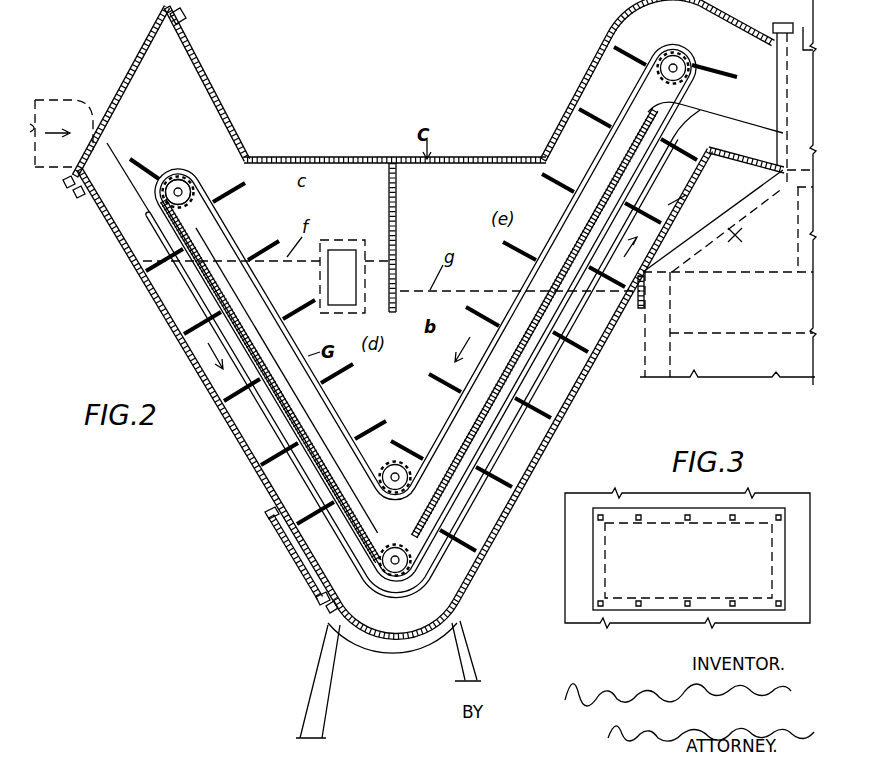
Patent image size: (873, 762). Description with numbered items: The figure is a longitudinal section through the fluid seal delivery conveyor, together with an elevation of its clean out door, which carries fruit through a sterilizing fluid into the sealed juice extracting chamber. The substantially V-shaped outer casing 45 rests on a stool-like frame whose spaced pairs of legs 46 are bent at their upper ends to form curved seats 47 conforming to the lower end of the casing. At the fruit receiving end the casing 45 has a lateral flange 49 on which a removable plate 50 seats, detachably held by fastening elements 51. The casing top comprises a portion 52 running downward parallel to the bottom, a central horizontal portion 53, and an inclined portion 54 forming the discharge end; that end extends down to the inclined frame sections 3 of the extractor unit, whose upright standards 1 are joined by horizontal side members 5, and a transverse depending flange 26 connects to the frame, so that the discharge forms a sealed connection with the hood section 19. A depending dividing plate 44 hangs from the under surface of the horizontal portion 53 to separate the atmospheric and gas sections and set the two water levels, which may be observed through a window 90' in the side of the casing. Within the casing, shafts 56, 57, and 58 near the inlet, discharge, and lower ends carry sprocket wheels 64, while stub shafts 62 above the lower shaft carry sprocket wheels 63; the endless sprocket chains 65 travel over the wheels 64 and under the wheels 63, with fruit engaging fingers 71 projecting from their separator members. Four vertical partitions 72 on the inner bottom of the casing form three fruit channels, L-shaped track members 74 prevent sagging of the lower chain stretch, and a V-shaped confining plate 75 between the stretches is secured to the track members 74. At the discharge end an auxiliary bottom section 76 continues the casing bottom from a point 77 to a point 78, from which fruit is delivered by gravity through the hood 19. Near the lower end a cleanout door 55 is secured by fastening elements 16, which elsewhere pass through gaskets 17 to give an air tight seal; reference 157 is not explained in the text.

In FIG. 2, the upright frame standards 1 is at (660, 355).
In FIG. 2, the upwardly and inwardly extending sections 3 is at (713, 221).
In FIG. 2, the horizontal side members 5 is at (563, 117).
In FIG. 2, the fastening elements 16 is at (330, 603).
In FIG. 3, the fastening elements 16 is at (690, 598).
In FIG. 2, the gaskets 17 is at (283, 517).
In FIG. 2, the hood section 19 is at (790, 28).
In FIG. 2, the transverse depending flange 26 is at (640, 316).
In FIG. 2, the dividing plate 44 is at (397, 217).
In FIG. 2, the outer casing 45 is at (276, 157).
In FIG. 3, the outer casing 45 is at (800, 500).
In FIG. 2, the legs 46 is at (325, 682).
In FIG. 2, the curved seats 47 is at (420, 643).
In FIG. 2, the lateral flange 49 is at (186, 17).
In FIG. 2, the removable plate 50 is at (130, 77).
In FIG. 2, the fastening elements 51 is at (64, 184).
In FIG. 2, the top portion 52 is at (203, 78).
In FIG. 2, the central horizontal portion 53 is at (473, 157).
In FIG. 2, the inclined portion 54 is at (610, 30).
In FIG. 2, the cleanout door 55 is at (297, 567).
In FIG. 3, the cleanout door 55 is at (665, 508).
In FIG. 2, the shaft 56 is at (178, 188).
In FIG. 2, the shaft 57 is at (690, 67).
In FIG. 2, the shaft 58 is at (397, 556).
In FIG. 2, the stub shafts 62 is at (392, 474).
In FIG. 2, the sprocket wheels 63 is at (398, 470).
In FIG. 2, the sprocket wheels 64 is at (188, 185).
In FIG. 2, the endless sprocket chains 65 is at (170, 172).
In FIG. 2, the fruit engaging fingers 71 is at (146, 162).
In FIG. 2, the vertical partitions 72 is at (107, 143).
In FIG. 2, the L-shaped track members 74 is at (148, 218).
In FIG. 2, the V-shaped confining plate 75 is at (235, 307).
In FIG. 2, the auxiliary bottom section 76 is at (677, 200).
In FIG. 2, the point 77 is at (643, 272).
In FIG. 2, the point 78 is at (718, 155).
In FIG. 2, the window 90' is at (342, 254).
In FIG. 2, the inlet 157 is at (55, 98).